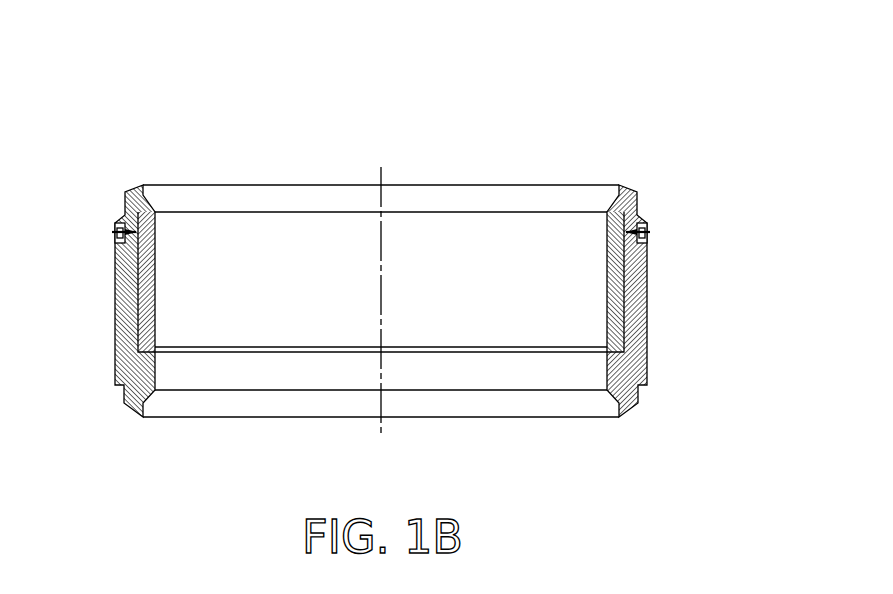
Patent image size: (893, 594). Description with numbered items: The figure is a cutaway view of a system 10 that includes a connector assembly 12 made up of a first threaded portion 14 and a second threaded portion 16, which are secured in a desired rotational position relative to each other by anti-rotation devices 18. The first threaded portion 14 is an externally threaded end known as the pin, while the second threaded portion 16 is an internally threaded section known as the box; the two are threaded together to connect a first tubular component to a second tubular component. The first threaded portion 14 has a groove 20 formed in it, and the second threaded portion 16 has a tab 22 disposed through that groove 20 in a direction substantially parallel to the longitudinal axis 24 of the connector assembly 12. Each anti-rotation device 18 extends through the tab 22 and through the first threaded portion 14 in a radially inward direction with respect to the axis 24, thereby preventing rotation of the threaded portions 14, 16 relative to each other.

The system 10 is at (398, 224).
The connector assembly 12 is at (398, 278).
The first threaded portion 14 is at (417, 301).
The second threaded portion 16 is at (428, 282).
The anti-rotation device 18 is at (382, 244).
The groove 20 is at (382, 209).
The tab 22 is at (382, 219).
The longitudinal axis 24 is at (439, 278).